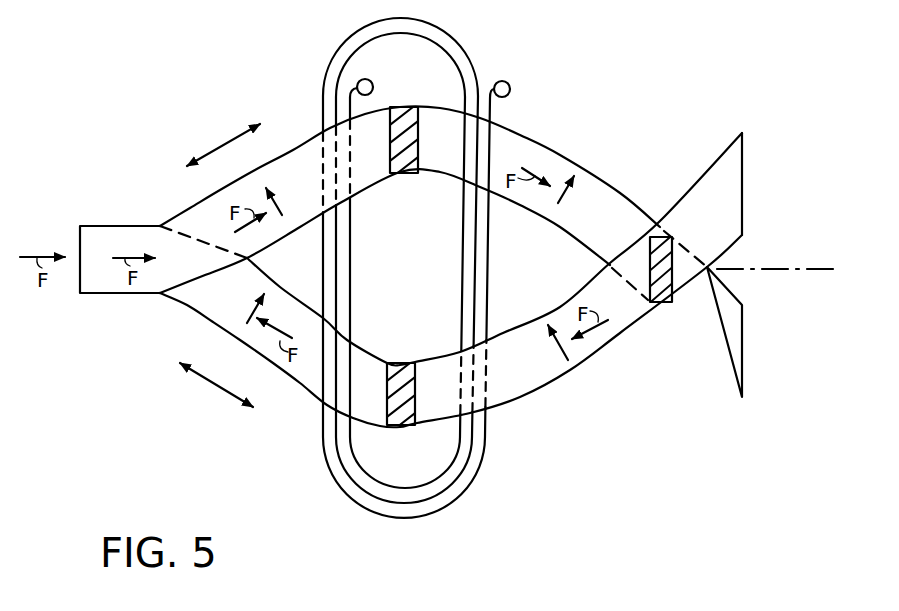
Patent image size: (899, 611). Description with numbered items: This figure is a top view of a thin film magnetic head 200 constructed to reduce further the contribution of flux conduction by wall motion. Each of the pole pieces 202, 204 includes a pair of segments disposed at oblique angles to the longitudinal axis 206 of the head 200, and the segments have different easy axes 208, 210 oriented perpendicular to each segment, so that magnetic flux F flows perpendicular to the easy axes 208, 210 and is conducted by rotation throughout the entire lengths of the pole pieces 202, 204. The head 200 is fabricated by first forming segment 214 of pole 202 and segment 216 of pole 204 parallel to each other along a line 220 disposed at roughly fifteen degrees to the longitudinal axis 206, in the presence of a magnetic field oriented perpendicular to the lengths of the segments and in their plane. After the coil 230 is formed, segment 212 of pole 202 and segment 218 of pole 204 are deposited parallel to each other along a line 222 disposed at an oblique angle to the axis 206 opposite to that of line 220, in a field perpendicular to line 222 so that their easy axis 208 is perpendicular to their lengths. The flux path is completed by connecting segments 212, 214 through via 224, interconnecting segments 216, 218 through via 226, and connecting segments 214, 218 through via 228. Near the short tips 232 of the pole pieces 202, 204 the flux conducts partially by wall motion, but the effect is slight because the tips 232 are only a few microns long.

The thin film magnetic head 200 is at (600, 67).
The pole piece 202 is at (521, 126).
The pole piece 204 is at (511, 419).
The longitudinal axis 206 is at (817, 272).
The easy axis 208 is at (293, 192).
The easy axis 210 is at (250, 318).
The segment 212 is at (306, 235).
The segment 214 is at (626, 198).
The segment 216 is at (200, 312).
The segment 218 is at (508, 332).
The line 220 is at (220, 388).
The line 222 is at (212, 150).
The via 224 is at (395, 174).
The via 226 is at (394, 360).
The via 228 is at (647, 304).
The coil 230 is at (413, 520).
The tips 232 is at (104, 298).